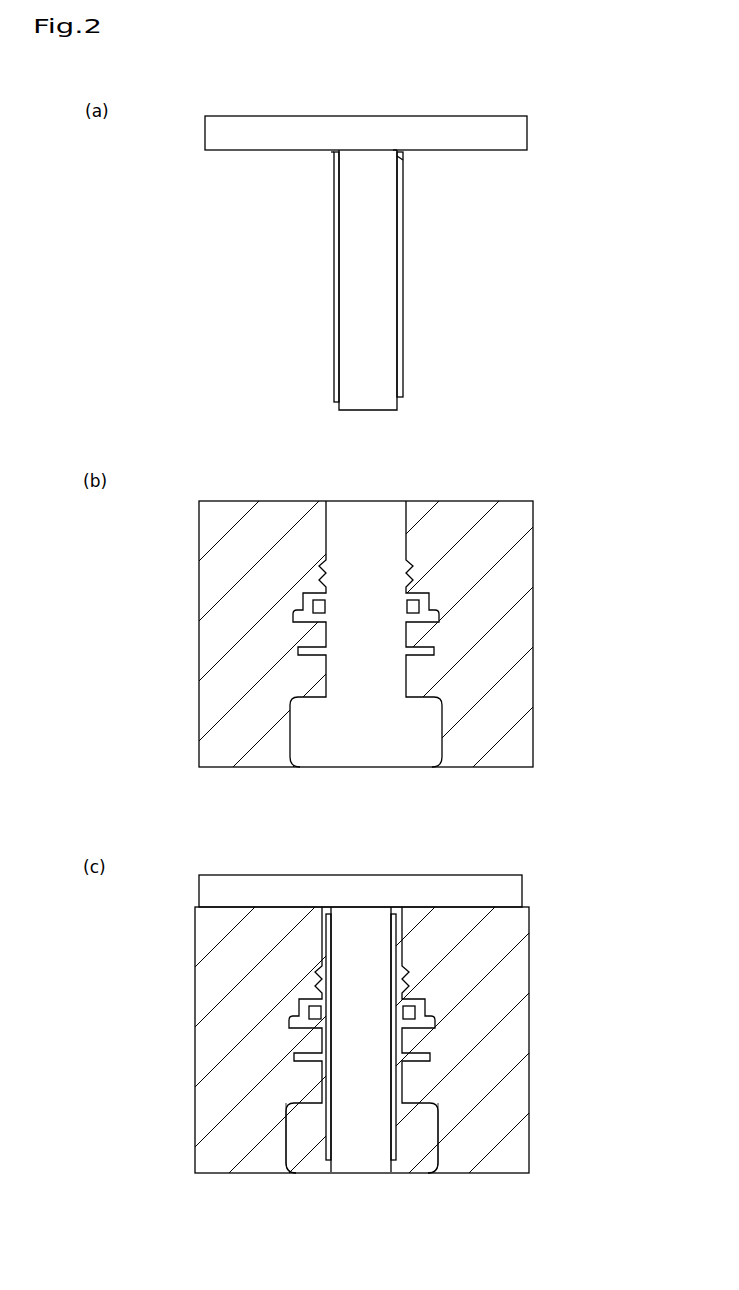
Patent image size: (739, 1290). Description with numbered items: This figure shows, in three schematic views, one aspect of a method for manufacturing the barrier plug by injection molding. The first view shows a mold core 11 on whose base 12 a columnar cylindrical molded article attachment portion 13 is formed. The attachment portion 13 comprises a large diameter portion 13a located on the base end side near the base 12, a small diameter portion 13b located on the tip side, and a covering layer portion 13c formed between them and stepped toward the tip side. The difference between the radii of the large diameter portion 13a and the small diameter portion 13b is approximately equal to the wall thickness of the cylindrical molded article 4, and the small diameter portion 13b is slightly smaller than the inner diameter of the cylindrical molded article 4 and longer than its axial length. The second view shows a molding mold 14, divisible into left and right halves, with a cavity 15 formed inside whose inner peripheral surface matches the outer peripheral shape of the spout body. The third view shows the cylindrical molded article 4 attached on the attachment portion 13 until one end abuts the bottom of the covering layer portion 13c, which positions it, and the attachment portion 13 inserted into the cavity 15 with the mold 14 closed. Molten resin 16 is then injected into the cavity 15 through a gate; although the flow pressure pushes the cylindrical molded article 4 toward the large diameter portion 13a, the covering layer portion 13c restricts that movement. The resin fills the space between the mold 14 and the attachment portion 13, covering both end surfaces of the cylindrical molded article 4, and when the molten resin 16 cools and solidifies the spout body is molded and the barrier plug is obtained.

The mold core 11 is at (391, 663).
The base 12 is at (517, 137).
The cylindrical molded article attachment portion 13 is at (378, 390).
The large diameter portion 13a is at (397, 152).
The small diameter portion 13b is at (400, 160).
The covering layer portion 13c is at (332, 152).
The cylindrical molded article 4 is at (333, 332).
The molding mold 14 is at (369, 808).
The cavity 15 is at (371, 517).
The molten resin 16 is at (313, 1157).